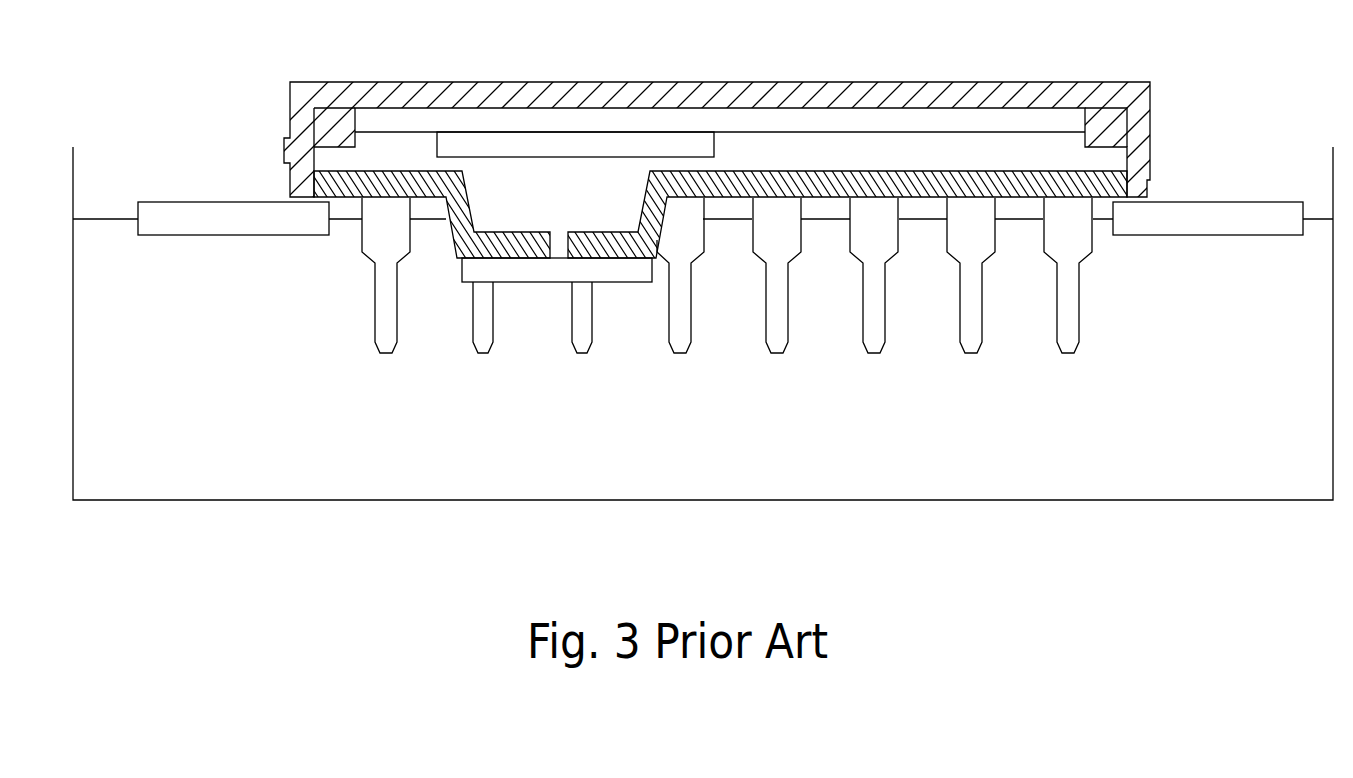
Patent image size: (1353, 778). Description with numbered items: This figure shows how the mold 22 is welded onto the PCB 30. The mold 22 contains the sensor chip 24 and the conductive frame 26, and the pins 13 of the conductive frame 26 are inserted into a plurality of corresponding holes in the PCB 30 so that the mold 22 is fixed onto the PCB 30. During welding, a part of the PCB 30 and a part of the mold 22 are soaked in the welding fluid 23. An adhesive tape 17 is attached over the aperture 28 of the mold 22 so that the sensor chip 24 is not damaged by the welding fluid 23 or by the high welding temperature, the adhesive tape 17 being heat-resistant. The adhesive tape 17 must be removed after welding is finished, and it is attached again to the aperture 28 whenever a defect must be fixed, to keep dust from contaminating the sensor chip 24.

The pins 13 is at (1068, 308).
The adhesive tape 17 is at (540, 277).
The mold 22 is at (710, 93).
The welding fluid 23 is at (1188, 453).
The sensor chip 24 is at (585, 145).
The conductive frame 26 is at (913, 123).
The aperture 28 is at (563, 248).
The PCB 30 is at (1209, 202).